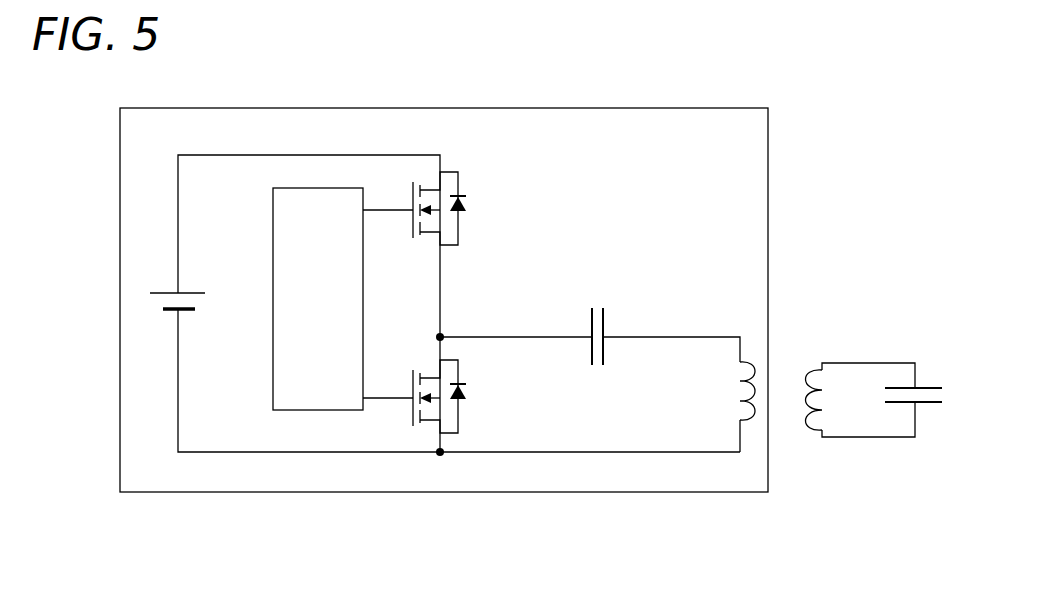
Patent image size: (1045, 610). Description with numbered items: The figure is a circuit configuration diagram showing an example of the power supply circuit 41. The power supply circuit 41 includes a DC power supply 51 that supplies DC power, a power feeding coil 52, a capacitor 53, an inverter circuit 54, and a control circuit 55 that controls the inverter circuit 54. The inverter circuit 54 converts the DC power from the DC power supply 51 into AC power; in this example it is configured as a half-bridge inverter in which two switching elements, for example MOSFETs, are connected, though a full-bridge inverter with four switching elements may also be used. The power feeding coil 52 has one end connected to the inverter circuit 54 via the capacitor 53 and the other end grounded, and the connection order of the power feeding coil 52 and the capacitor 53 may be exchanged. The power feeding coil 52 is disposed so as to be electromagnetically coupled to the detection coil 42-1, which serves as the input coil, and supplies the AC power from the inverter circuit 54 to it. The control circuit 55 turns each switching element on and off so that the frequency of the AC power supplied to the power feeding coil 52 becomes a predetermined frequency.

The power supply circuit 41 is at (669, 511).
The detection coil 42-1 is at (800, 381).
The DC power supply 51 is at (152, 300).
The power feeding coil 52 is at (755, 410).
The capacitor 53 is at (596, 305).
The inverter circuit 54 is at (475, 500).
The control circuit 55 is at (317, 412).